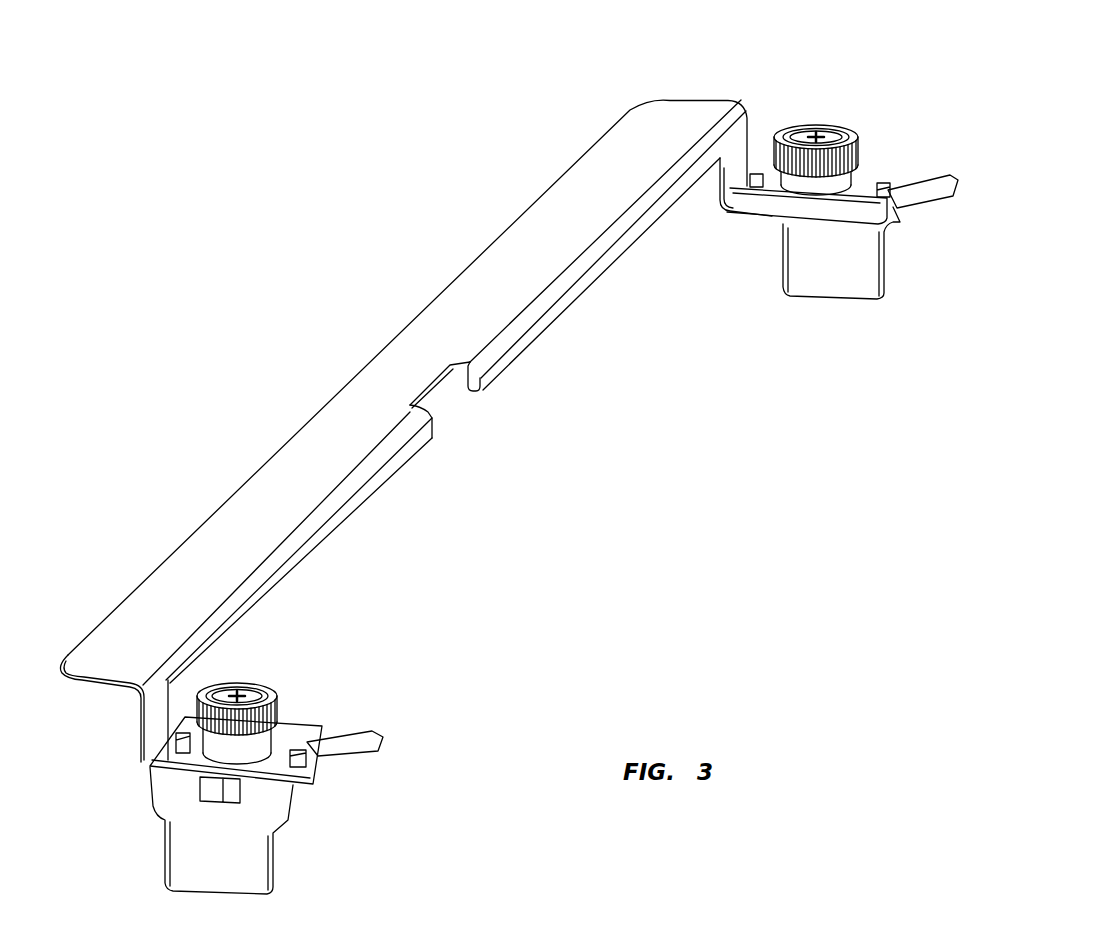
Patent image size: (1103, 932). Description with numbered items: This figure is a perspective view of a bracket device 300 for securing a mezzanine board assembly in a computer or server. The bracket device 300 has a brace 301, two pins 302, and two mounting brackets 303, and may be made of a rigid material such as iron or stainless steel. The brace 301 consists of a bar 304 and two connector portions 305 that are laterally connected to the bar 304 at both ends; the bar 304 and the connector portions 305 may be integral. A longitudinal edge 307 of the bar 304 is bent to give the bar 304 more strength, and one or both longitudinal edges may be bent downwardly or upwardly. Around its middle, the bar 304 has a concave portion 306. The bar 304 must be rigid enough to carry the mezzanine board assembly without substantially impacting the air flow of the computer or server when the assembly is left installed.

The bracket device 300 is at (300, 352).
The brace 301 is at (255, 452).
The pin 302 is at (258, 686).
The mounting bracket 303 is at (167, 850).
The bar 304 is at (231, 495).
The connector portion 305 is at (187, 757).
The concave portion 306 is at (432, 390).
The longitudinal edge 307 is at (398, 457).